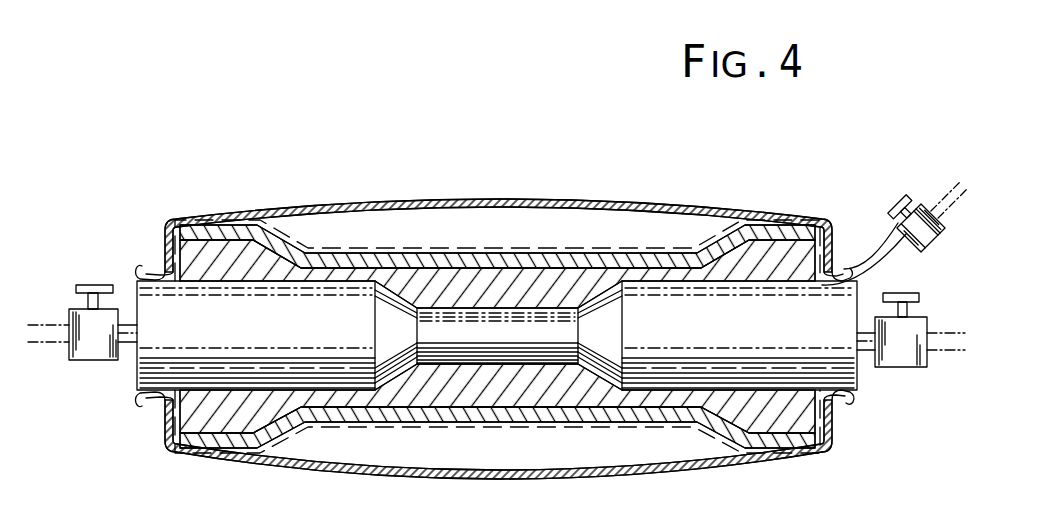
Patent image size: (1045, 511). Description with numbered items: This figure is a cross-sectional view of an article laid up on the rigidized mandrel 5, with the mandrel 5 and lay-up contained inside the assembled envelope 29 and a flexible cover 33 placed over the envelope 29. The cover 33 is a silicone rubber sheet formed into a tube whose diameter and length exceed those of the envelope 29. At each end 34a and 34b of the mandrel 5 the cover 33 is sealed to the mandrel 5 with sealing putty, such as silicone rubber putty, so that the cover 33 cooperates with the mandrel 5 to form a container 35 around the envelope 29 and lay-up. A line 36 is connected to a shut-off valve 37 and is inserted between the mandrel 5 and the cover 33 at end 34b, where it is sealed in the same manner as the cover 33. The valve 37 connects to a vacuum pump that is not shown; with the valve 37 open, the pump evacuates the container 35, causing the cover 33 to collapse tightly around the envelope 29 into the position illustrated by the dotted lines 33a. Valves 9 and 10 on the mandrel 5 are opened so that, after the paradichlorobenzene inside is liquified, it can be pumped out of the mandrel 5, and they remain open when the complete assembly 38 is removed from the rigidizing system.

The mandrel 5 is at (292, 337).
The valve 9 is at (83, 361).
The valve 10 is at (918, 368).
The envelope 29 is at (343, 253).
The flexible cover 33 is at (462, 203).
The dotted lines 33a is at (494, 248).
The end of the mandrel 34a is at (142, 275).
The end of the mandrel 34b is at (848, 403).
The container 35 is at (658, 226).
The line 36 is at (885, 250).
The shut-off valve 37 is at (905, 197).
The complete assembly 38 is at (214, 193).